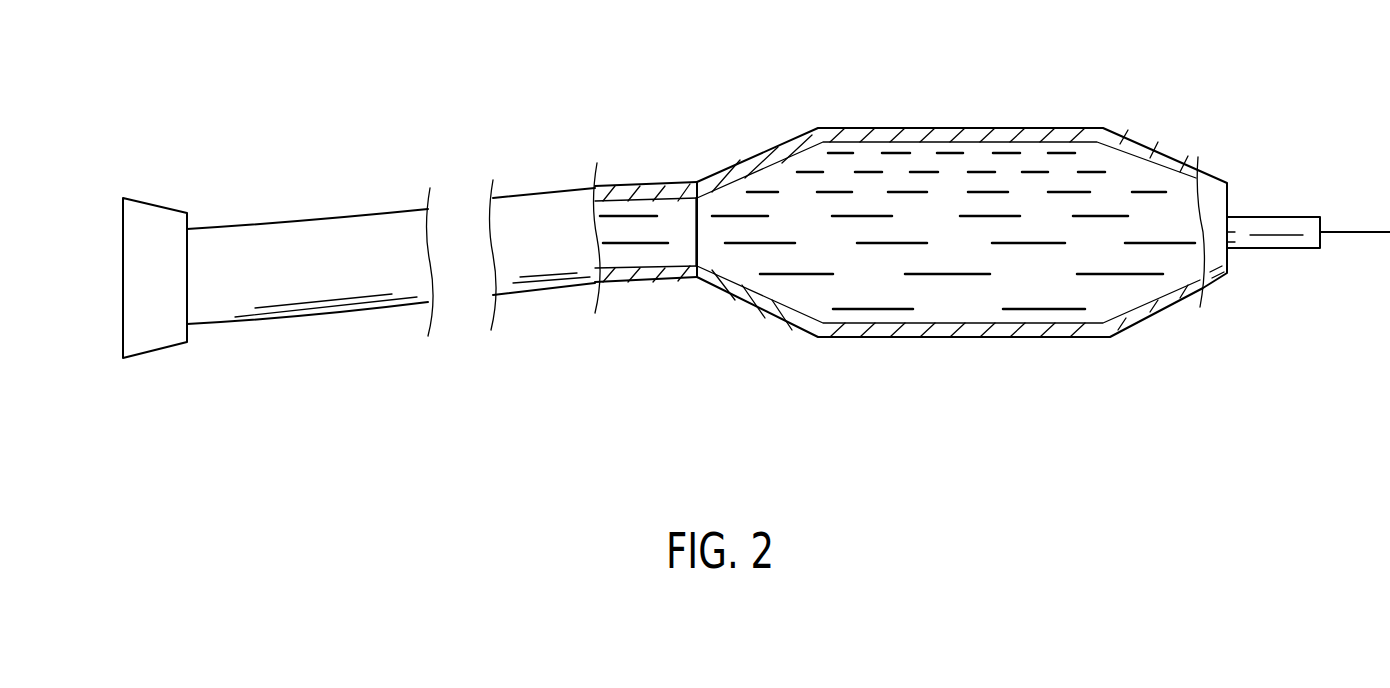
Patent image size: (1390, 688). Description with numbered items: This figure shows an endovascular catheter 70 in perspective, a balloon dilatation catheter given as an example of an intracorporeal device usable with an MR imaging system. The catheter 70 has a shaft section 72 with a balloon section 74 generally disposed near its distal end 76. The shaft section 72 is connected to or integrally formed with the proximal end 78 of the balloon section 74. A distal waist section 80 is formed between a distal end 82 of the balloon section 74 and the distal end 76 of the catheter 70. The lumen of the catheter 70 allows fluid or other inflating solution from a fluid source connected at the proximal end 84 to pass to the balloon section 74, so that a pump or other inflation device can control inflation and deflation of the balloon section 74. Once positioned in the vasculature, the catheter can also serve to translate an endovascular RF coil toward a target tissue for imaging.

The endovascular catheter 70 is at (915, 68).
The shaft section 72 is at (308, 240).
The balloon section 74 is at (1120, 187).
The distal end 76 is at (1348, 230).
The proximal end of balloon section 78 is at (697, 211).
The distal waist section 80 is at (1293, 250).
The distal end of balloon section 82 is at (1230, 237).
The proximal end 84 is at (135, 330).